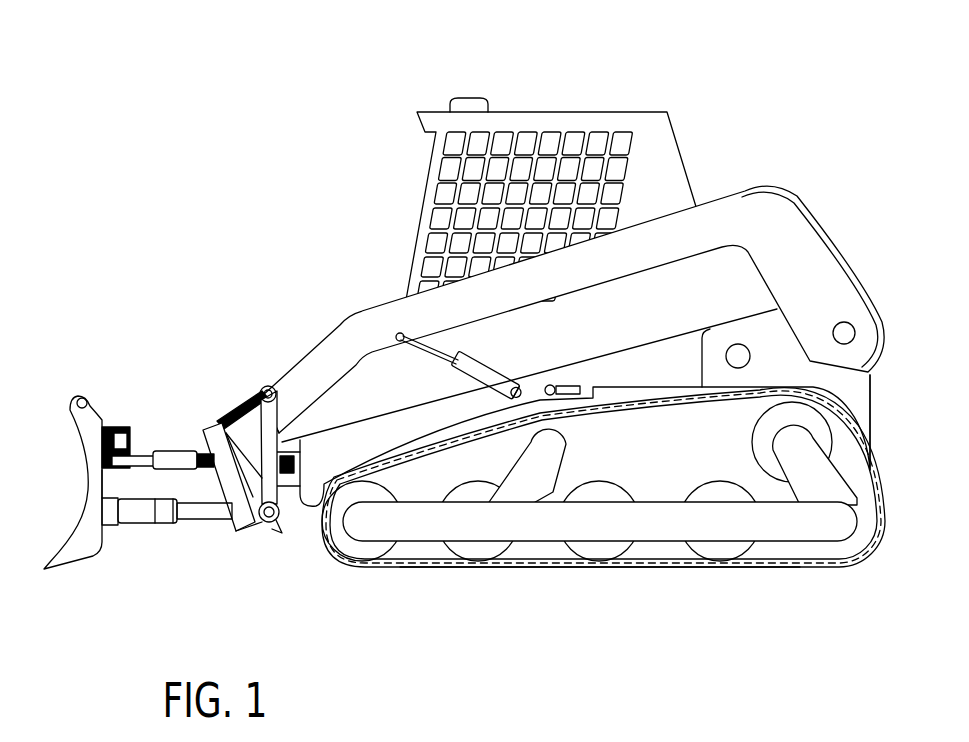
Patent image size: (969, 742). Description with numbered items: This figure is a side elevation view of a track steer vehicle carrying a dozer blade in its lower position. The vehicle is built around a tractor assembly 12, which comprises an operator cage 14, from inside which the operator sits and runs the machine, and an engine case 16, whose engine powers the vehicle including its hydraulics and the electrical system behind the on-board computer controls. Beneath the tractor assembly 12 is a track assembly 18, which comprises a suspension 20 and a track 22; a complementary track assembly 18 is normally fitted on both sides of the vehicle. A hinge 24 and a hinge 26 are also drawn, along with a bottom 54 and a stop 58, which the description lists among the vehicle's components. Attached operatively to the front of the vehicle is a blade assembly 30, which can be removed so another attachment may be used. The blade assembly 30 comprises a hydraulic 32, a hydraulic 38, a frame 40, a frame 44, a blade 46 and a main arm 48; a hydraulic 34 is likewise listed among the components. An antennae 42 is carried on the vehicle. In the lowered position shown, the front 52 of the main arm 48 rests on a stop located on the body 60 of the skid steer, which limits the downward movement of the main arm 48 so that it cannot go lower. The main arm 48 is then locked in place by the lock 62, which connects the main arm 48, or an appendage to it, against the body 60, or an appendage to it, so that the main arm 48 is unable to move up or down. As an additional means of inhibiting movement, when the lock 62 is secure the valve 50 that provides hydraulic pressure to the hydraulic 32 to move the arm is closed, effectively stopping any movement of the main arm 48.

The tractor assembly 12 is at (882, 262).
The operator cage 14 is at (578, 122).
The engine case 16 is at (856, 395).
The track assembly 18 is at (397, 578).
The suspension 20 is at (525, 515).
The track 22 is at (622, 567).
The hinge 24 is at (266, 520).
The hinge 26 is at (851, 333).
The blade assembly 30 is at (138, 547).
The hydraulic 32 is at (453, 358).
The hydraulic 34 is at (246, 432).
The hydraulic 38 is at (176, 458).
The frame 40 is at (193, 512).
The antennae 42 is at (470, 100).
The frame 44 is at (238, 532).
The blade 46 is at (72, 395).
The main arm 48 is at (780, 210).
The valve 50 is at (553, 387).
The front 52 is at (299, 512).
The bottom 54 is at (72, 548).
The stop 58 is at (290, 455).
The body 60 is at (345, 438).
The lock 62 is at (267, 388).